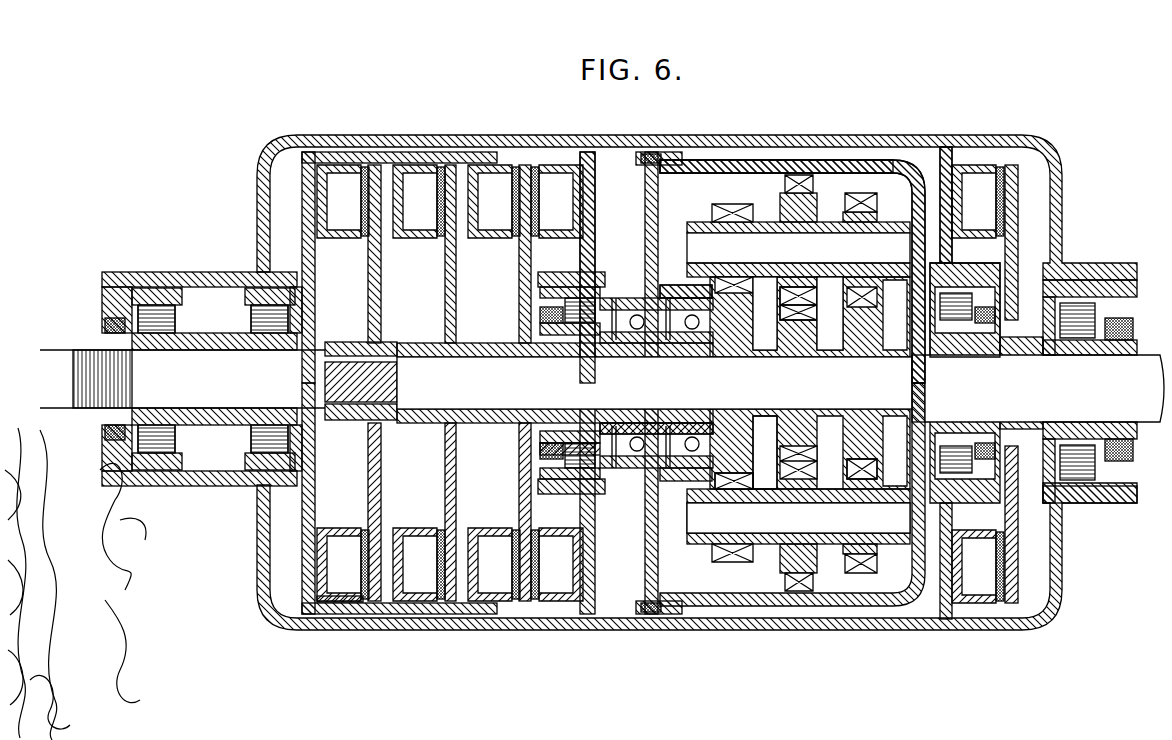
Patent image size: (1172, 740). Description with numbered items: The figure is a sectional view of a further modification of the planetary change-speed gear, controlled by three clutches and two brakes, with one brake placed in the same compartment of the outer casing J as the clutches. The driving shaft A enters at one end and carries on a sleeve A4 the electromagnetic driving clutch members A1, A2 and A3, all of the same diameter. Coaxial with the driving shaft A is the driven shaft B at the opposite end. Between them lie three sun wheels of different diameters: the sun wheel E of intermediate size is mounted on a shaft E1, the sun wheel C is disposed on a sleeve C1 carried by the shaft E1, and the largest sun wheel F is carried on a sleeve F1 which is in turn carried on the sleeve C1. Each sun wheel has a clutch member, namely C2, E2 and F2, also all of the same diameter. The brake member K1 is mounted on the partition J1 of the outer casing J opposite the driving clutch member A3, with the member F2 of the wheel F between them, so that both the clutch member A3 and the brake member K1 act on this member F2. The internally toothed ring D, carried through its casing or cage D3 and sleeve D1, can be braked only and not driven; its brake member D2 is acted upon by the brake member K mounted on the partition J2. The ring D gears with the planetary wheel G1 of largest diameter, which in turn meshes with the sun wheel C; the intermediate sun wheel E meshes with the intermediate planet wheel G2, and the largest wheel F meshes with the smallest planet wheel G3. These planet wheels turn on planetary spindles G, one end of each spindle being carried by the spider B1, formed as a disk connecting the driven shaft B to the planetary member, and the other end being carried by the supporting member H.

The driving shaft A is at (182, 379).
The clutch member A1 is at (333, 572).
The clutch member A2 is at (413, 585).
The driving clutch member A3 is at (492, 585).
The sleeve A4 is at (355, 601).
The driven shaft B is at (1044, 388).
The spider B1 is at (908, 437).
The sun wheel C is at (786, 331).
The sleeve C1 is at (584, 418).
The clutch member C2 is at (457, 185).
The internally toothed ring D is at (800, 183).
The sleeve D1 is at (955, 352).
The brake member D2 is at (1020, 215).
The casing D3 is at (712, 160).
The sun wheel E is at (858, 331).
The shaft E1 is at (654, 383).
The clutch member E2 is at (381, 188).
The sun wheel F is at (765, 313).
The sleeve F1 is at (567, 422).
The clutch member F2 is at (533, 190).
The planetary spindle G is at (798, 518).
The planetary wheel G1 is at (776, 585).
The planet wheel G2 is at (855, 554).
The planet wheel G3 is at (722, 548).
The supporting member H is at (688, 290).
The outer casing J is at (600, 631).
The partition J1 is at (597, 209).
The partition J2 is at (945, 185).
The brake member K is at (990, 188).
The brake member K1 is at (572, 185).